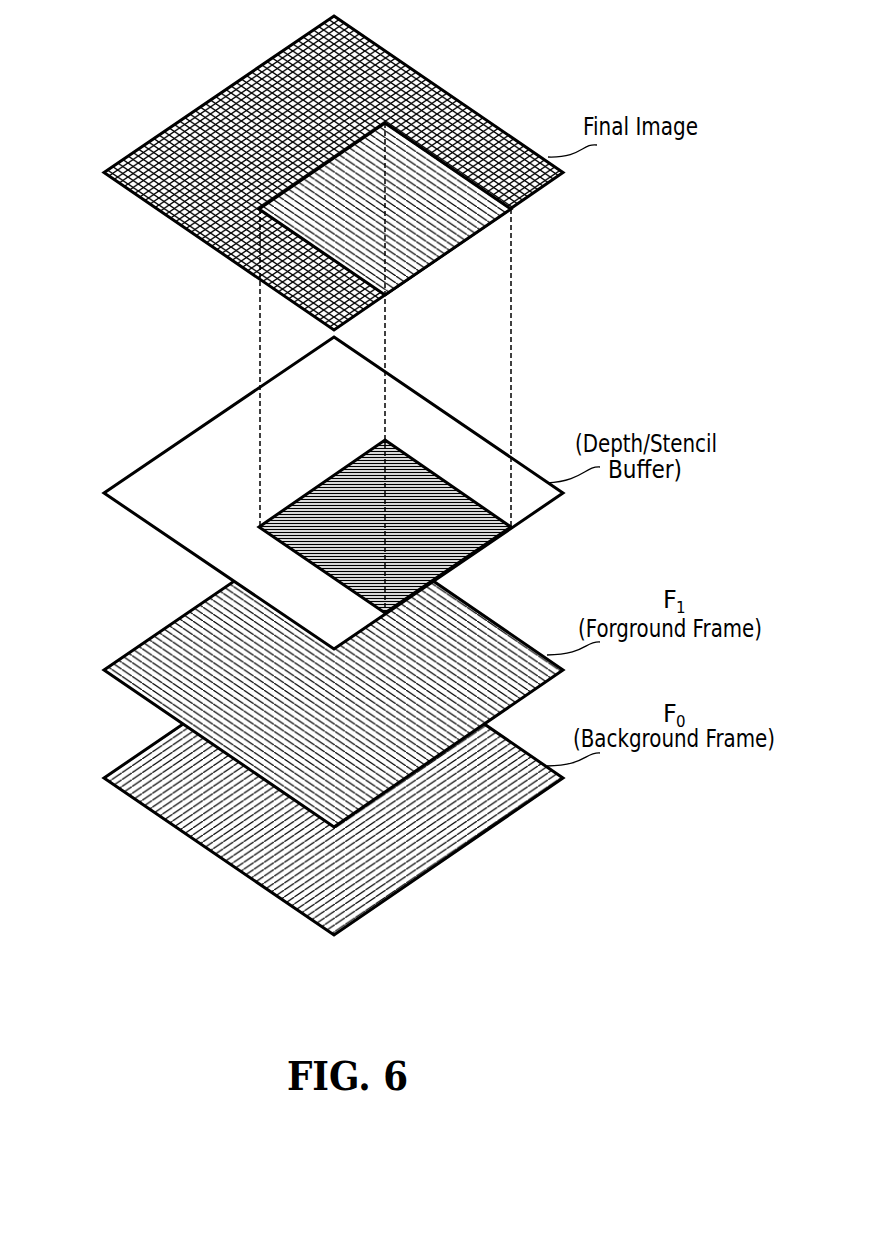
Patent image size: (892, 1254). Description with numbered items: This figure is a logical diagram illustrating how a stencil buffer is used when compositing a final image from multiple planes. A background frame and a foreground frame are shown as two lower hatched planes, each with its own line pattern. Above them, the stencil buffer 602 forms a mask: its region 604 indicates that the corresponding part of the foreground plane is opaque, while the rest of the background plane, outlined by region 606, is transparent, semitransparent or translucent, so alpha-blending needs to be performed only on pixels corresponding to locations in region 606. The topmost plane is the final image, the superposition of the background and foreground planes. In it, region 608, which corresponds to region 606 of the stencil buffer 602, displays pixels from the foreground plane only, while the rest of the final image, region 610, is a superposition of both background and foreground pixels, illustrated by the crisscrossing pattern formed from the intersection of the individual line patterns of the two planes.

The stencil buffer 602 is at (317, 493).
The region 604 is at (447, 543).
The region 606 is at (238, 447).
The region 608 is at (427, 233).
The region 610 is at (167, 162).